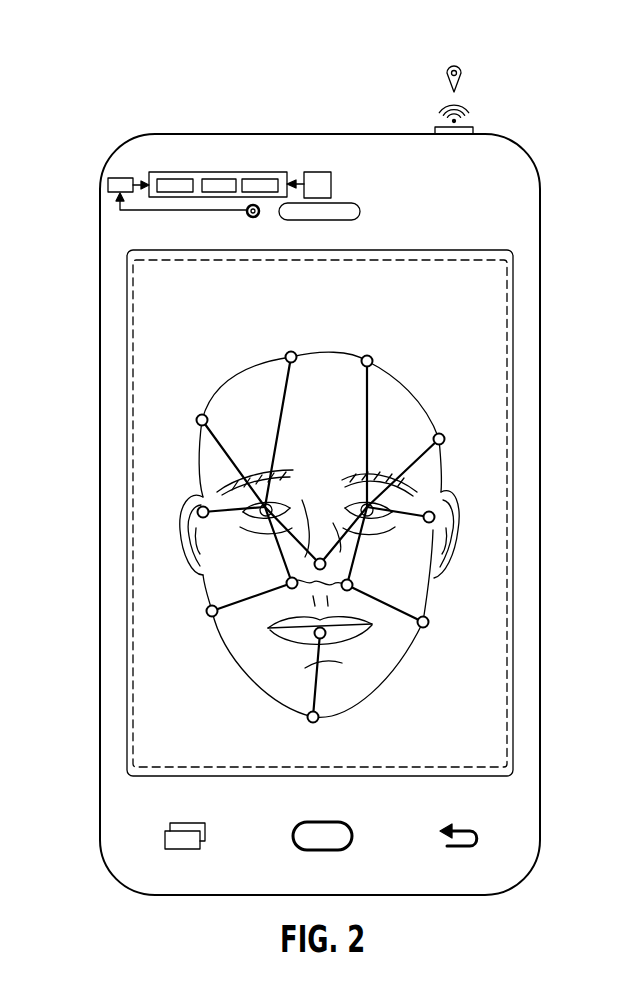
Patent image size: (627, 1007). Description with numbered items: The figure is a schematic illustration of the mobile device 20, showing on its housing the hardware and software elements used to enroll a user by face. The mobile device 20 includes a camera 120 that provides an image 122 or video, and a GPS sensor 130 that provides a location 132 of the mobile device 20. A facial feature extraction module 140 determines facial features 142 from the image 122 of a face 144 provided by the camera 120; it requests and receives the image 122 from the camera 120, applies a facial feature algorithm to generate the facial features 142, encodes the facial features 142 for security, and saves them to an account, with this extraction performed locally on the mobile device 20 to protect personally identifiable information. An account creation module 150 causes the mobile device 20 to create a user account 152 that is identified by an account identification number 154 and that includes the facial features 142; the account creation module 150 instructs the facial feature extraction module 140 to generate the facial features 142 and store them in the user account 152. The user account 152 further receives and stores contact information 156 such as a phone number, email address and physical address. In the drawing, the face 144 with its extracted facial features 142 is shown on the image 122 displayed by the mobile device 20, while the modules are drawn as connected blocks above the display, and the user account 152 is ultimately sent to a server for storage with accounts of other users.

The mobile device 20 is at (112, 80).
The camera 120 is at (257, 227).
The image 122 is at (163, 211).
The GPS sensor 130 is at (475, 131).
The location 132 is at (463, 73).
The facial feature extraction module 140 is at (122, 178).
The facial features 142 is at (167, 179).
The face 144 is at (420, 394).
The account creation module 150 is at (331, 184).
The user account 152 is at (258, 172).
The account identification number 154 is at (268, 179).
The contact information 156 is at (212, 179).